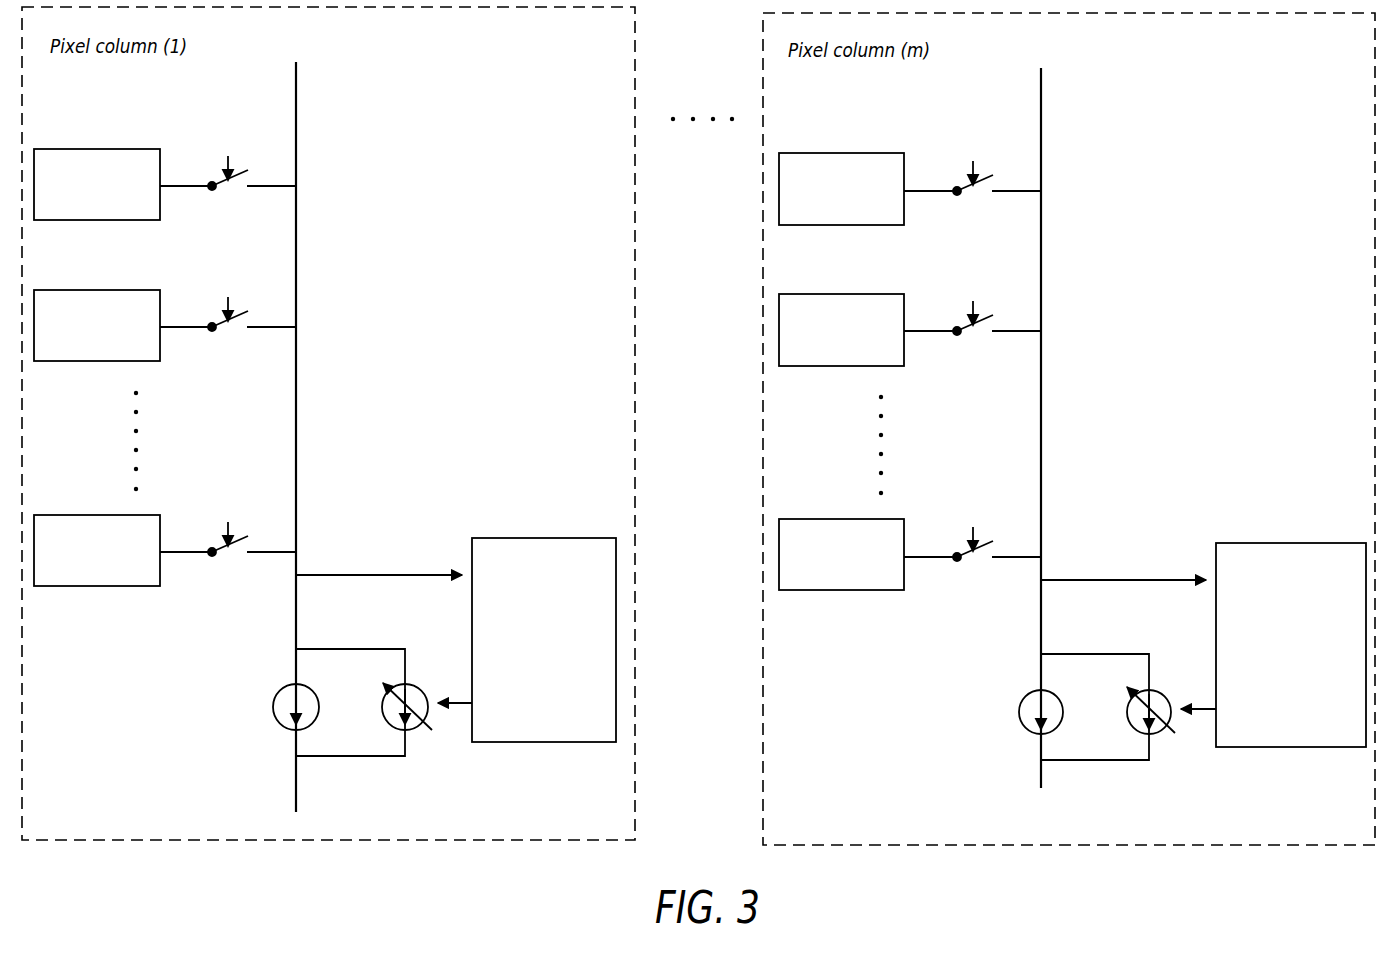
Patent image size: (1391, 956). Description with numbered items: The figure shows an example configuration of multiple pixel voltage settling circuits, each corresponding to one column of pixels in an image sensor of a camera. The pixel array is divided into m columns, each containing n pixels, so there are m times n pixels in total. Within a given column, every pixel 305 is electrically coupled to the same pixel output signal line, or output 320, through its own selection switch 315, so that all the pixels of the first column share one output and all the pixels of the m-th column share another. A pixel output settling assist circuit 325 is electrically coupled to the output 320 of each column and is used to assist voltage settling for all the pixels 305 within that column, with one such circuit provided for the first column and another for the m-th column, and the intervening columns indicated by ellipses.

The pixel 305 is at (469, 369).
The selection switch 315 is at (600, 374).
The pixel output signal line 320 is at (778, 437).
The pixel output settling assist circuit 325 is at (819, 649).